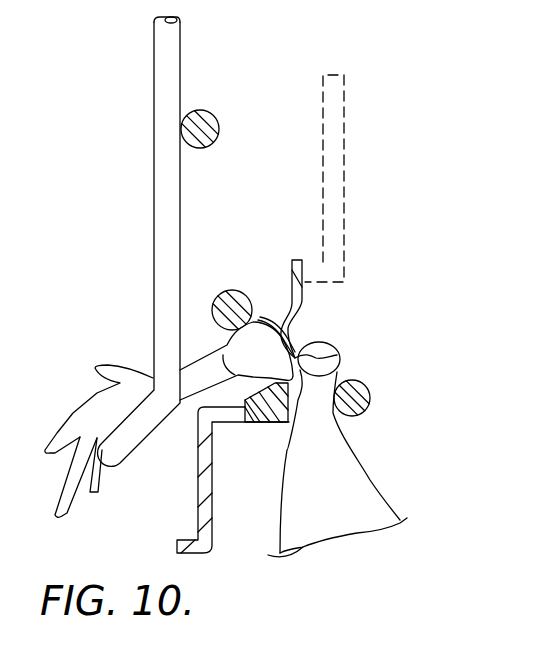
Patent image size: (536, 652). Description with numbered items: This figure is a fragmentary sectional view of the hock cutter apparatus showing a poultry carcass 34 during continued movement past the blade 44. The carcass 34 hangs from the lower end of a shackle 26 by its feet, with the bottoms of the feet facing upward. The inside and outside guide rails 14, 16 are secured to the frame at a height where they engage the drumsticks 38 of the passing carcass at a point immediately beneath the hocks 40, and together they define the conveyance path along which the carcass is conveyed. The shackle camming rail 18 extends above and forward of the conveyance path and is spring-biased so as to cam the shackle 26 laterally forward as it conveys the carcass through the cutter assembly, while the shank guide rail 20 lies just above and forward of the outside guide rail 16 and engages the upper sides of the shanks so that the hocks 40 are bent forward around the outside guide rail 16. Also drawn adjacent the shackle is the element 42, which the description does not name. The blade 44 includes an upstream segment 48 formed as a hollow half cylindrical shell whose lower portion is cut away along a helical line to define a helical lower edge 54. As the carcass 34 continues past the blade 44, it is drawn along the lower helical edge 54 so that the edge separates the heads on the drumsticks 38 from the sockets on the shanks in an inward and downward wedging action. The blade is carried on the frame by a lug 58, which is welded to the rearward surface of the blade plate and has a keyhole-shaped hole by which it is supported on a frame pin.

The inside guide rail 14 is at (366, 408).
The outside guide rail 16 is at (270, 420).
The shackle camming rail 18 is at (208, 122).
The shank guide rail 20 is at (222, 292).
The shackle 26 is at (167, 197).
The poultry carcass 34 is at (335, 548).
The drumstick 38 is at (307, 527).
The hock 40 is at (330, 339).
The hand 42 is at (205, 372).
The blade 44 is at (289, 256).
The upstream segment 48 is at (300, 307).
The helical lower edge 54 is at (337, 376).
The lug 58 is at (340, 157).